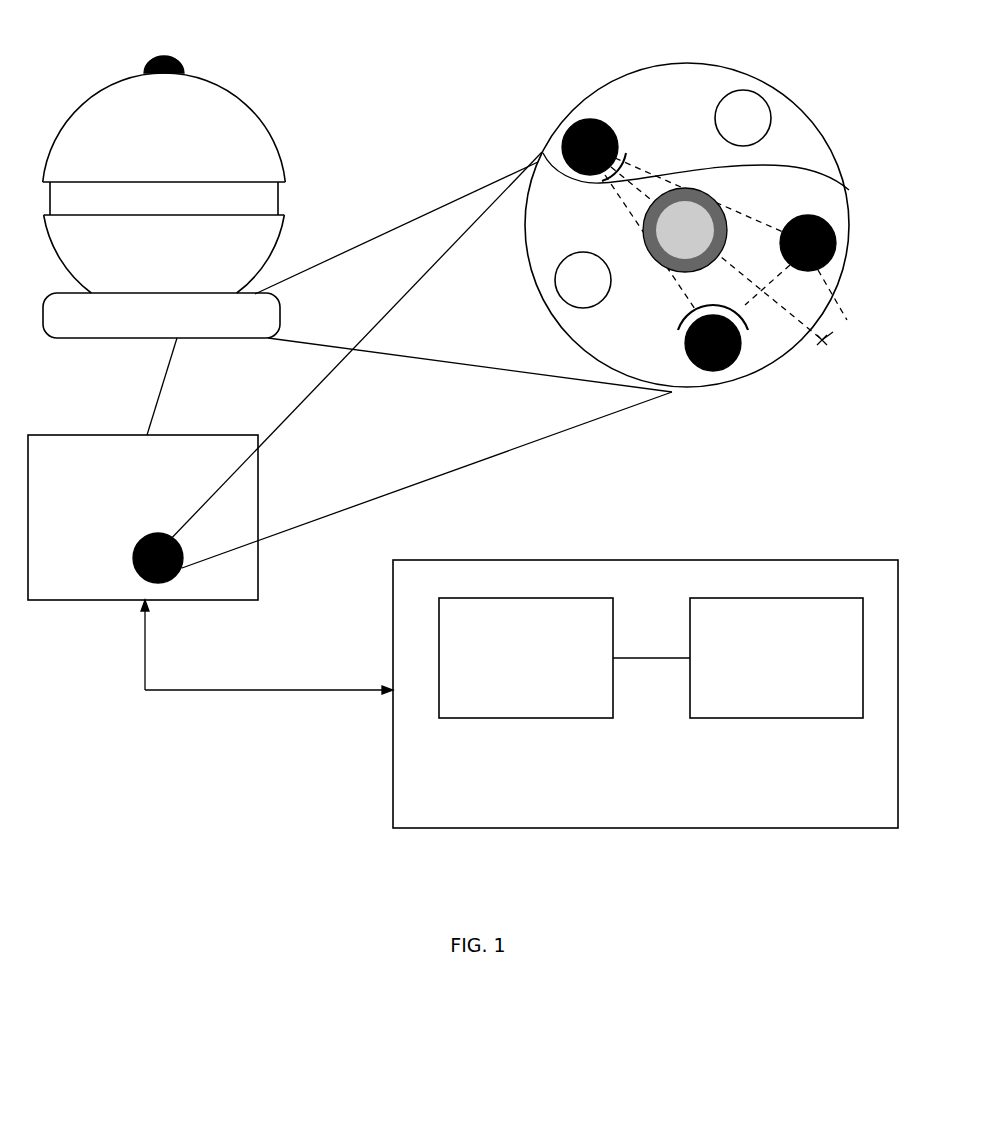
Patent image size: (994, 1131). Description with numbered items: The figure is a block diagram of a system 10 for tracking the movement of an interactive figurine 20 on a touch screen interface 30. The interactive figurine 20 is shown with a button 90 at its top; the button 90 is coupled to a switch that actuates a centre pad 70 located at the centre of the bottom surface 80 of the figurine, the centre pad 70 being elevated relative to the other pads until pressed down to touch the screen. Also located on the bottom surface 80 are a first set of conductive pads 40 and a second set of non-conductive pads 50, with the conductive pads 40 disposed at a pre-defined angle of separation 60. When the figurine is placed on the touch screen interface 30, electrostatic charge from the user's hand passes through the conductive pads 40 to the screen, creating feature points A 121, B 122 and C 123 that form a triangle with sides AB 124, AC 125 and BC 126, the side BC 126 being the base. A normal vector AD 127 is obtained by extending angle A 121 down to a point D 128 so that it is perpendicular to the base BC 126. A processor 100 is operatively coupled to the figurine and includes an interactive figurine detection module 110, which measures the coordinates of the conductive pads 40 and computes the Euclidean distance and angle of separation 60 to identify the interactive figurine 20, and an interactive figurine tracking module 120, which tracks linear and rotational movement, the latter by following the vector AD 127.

The system 10 is at (797, 40).
The interactive figurine 20 is at (240, 100).
The touch screen interface 30 is at (258, 503).
The first set of conductive pads 40 is at (842, 318).
The second set of non-conductive pads 50 is at (737, 90).
The pre-defined angle of separation 60 is at (540, 157).
The centre pad 70 is at (849, 190).
The bottom surface 80 is at (153, 585).
The button 90 is at (157, 56).
The processor 100 is at (747, 560).
The interactive figurine detection module 110 is at (543, 718).
The interactive figurine tracking module 120 is at (723, 718).
The feature point A 121 is at (578, 120).
The feature point B 122 is at (735, 366).
The feature point C 123 is at (838, 245).
The side AB 124 is at (668, 282).
The side AC 125 is at (681, 188).
The side BC 126 is at (748, 307).
The normal vector AD 127 is at (833, 332).
The point D 128 is at (826, 380).